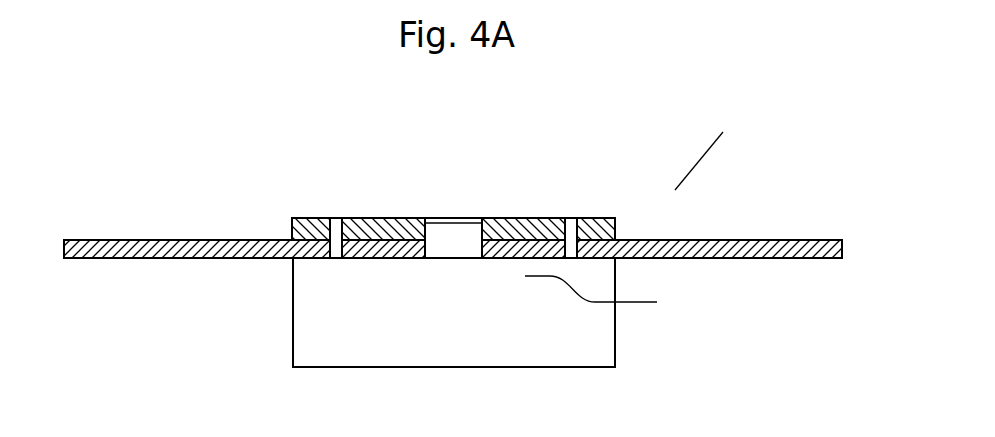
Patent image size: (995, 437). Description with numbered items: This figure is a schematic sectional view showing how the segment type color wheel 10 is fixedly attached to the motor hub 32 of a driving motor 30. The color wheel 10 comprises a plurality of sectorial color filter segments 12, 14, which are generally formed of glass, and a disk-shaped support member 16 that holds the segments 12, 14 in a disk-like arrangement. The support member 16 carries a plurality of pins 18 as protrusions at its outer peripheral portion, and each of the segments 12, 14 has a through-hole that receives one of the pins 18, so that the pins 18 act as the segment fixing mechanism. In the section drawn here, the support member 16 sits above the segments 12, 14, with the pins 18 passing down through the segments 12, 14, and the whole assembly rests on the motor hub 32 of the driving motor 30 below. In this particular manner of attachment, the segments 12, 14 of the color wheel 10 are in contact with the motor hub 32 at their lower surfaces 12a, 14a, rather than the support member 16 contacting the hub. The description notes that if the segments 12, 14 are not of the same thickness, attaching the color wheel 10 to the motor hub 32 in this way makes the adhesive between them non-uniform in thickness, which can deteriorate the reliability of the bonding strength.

The color wheel 10 is at (686, 182).
The sectorial color filter segment 12 is at (137, 240).
The surface of segment 12a is at (203, 261).
The sectorial color filter segment 14 is at (797, 240).
The surface of segment 14a is at (748, 259).
The support member 16 is at (525, 218).
The pin 18 is at (337, 218).
The driving motor 30 is at (647, 358).
The motor hub 32 is at (611, 299).